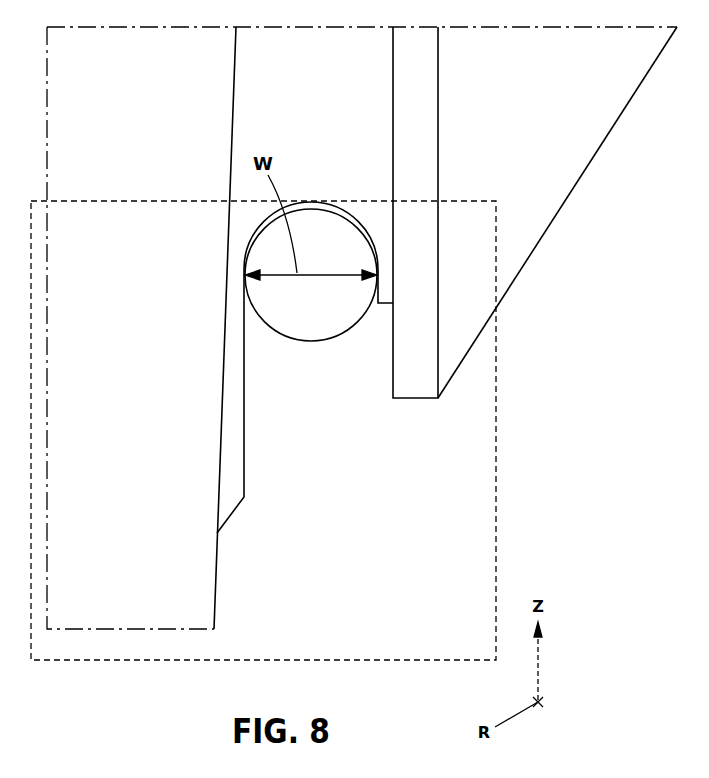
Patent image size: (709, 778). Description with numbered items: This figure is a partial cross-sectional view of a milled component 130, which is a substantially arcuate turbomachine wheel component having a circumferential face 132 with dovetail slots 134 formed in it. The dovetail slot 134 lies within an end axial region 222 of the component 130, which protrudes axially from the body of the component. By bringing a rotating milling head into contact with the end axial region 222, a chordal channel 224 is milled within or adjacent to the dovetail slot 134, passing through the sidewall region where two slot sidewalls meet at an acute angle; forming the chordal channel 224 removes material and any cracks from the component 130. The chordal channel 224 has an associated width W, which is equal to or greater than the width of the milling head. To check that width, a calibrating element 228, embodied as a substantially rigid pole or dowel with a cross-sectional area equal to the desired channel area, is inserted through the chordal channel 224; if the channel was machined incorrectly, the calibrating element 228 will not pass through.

The component 130 is at (528, 297).
The circumferential face 132 is at (464, 212).
The dovetail slot 134 is at (362, 328).
The end axial region 222 is at (146, 662).
The chordal channel 224 is at (305, 367).
The calibrating element 228 is at (342, 333).